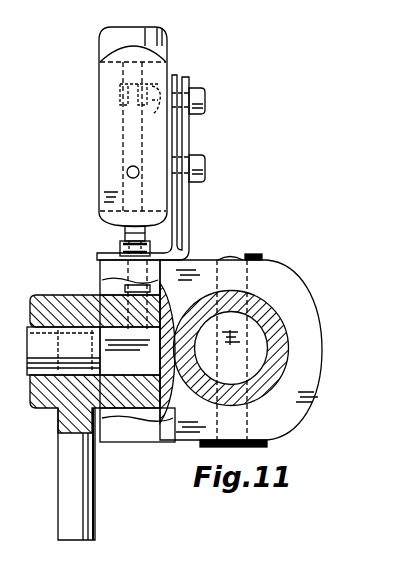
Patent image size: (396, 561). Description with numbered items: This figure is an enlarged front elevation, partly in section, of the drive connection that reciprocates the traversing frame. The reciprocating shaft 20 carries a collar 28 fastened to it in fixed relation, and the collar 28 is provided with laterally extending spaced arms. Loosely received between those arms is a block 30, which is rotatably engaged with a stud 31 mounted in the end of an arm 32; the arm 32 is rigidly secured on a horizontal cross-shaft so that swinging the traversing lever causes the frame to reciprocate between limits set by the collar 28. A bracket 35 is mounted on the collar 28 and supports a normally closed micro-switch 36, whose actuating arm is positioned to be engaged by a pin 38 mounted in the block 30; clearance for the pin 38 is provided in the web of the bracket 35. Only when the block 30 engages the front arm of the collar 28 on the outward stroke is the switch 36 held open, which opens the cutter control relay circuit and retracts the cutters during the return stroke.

The micro-switch 36 is at (105, 125).
The bracket 35 is at (188, 225).
The pin 38 is at (100, 283).
The block 30 is at (100, 290).
The stud 31 is at (140, 373).
The arm 32 is at (63, 453).
The reciprocating shaft 20 is at (284, 372).
The collar 28 is at (273, 415).